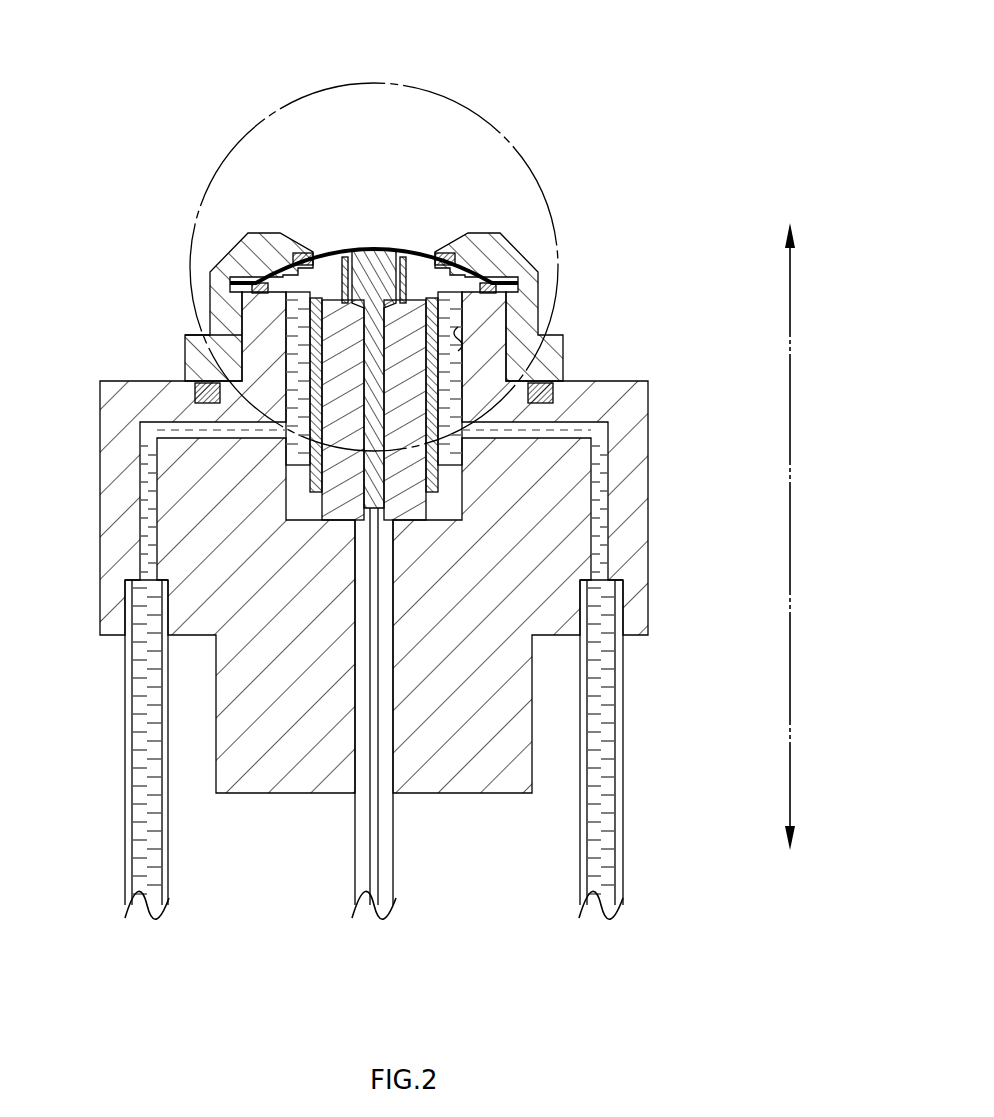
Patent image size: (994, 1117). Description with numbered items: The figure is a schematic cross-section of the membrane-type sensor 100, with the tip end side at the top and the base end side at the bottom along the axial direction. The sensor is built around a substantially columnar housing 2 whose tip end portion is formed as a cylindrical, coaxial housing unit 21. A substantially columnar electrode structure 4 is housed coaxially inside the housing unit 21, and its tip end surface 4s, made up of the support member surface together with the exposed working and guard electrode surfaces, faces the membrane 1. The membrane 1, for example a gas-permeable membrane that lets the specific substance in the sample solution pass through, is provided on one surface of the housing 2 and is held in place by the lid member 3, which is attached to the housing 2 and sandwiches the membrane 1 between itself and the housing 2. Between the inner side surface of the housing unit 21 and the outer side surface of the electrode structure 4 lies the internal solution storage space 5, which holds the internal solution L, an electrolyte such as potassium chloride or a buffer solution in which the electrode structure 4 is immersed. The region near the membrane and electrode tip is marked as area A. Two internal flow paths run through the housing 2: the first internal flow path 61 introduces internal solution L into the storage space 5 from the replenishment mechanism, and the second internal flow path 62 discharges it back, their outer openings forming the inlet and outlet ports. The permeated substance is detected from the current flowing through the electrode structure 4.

The membrane-type sensor 100 is at (128, 62).
The region A is at (432, 92).
The membrane 1 is at (374, 562).
The tip end surface of the electrode structure 4s is at (310, 262).
The lid member 3 is at (517, 253).
The housing unit 21 is at (237, 315).
The internal solution storage space 5 is at (465, 340).
The electrode structure 4 is at (452, 510).
The housing 2 is at (648, 470).
The first internal flow path 61 is at (157, 458).
The second internal flow path 62 is at (608, 556).
The internal solution L is at (290, 445).